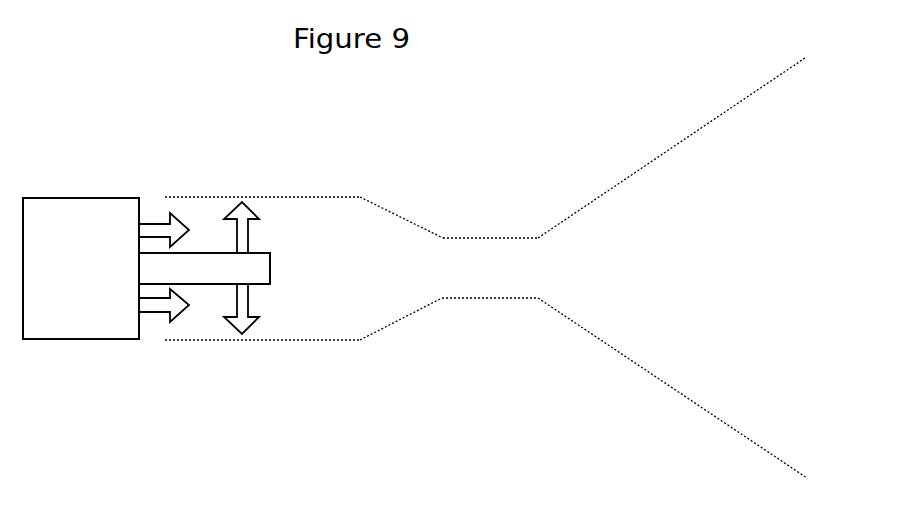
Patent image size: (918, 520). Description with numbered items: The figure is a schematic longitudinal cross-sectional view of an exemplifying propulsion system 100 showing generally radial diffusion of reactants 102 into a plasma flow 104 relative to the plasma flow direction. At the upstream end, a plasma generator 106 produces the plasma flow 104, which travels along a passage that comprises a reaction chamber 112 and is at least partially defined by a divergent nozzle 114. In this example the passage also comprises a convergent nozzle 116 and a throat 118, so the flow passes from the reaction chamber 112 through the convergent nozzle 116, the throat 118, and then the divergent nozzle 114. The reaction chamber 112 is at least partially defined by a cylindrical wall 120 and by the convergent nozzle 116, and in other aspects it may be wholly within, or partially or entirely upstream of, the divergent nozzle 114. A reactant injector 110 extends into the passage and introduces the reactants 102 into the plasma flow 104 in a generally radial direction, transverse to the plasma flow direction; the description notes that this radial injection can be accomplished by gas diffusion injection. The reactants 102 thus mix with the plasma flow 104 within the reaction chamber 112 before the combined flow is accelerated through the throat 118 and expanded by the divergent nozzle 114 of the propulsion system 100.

The propulsion system 100 is at (508, 124).
The reactants 102 is at (245, 202).
The plasma flow 104 is at (160, 222).
The plasma generator 106 is at (66, 279).
The reactant injector 110 is at (270, 274).
The reaction chamber 112 is at (317, 279).
The divergent nozzle 114 is at (620, 372).
The convergent nozzle 116 is at (403, 322).
The throat 118 is at (487, 306).
The cylindrical wall 120 is at (338, 339).